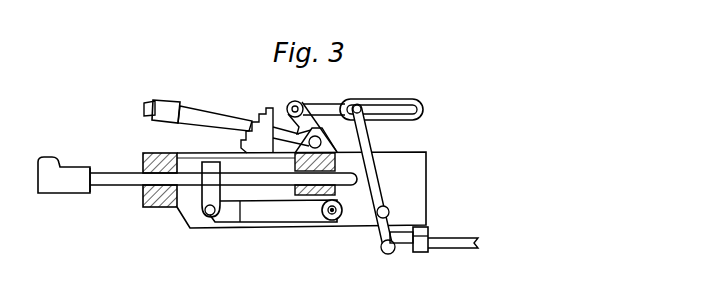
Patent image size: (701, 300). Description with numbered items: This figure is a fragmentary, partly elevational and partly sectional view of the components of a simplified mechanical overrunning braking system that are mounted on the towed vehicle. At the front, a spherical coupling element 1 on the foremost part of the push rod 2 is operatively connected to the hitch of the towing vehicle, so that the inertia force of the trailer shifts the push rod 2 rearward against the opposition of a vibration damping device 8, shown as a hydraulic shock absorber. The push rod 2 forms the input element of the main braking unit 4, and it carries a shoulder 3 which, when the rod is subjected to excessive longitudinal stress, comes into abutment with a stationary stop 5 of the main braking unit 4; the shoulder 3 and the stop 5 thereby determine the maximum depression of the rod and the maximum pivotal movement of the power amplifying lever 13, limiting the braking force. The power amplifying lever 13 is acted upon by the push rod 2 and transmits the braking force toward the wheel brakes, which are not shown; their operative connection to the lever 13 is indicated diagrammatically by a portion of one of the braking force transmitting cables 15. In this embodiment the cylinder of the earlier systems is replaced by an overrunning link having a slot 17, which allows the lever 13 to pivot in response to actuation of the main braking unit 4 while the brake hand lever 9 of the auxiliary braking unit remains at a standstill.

The spherical coupling element 1 is at (52, 170).
The push rod 2 is at (115, 182).
The shoulder 3 is at (92, 186).
The main braking unit 4 is at (182, 153).
The stationary stop 5 is at (144, 154).
The vibration damping device 8 is at (292, 215).
The brake hand lever 9 is at (208, 117).
The power amplifying lever 13 is at (370, 188).
The braking force transmitting cable 15 is at (462, 240).
The slot 17 is at (425, 105).